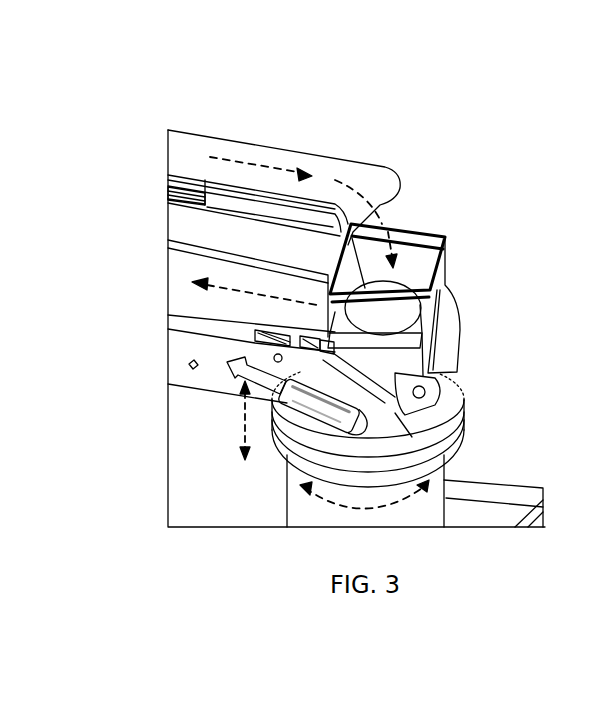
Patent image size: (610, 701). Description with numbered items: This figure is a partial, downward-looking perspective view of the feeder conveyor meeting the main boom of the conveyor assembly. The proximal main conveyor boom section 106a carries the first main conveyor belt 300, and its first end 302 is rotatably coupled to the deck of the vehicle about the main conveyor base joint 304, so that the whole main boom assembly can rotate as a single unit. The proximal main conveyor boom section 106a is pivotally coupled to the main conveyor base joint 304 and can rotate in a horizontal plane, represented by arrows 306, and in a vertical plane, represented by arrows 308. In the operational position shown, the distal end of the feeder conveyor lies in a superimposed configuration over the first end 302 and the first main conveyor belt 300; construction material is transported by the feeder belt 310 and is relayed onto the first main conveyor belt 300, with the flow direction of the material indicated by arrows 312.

The first main conveyor belt 300 is at (192, 302).
The proximal main conveyor boom section 106a is at (173, 369).
The arrows representing rotation in a vertical plane 308 is at (243, 428).
The arrows showing flow direction of construction material 312 is at (247, 161).
The belt 310 is at (363, 179).
The first end 302 is at (379, 380).
The main conveyor base joint 304 is at (365, 407).
The arrows representing rotation in a horizontal plane 306 is at (333, 500).